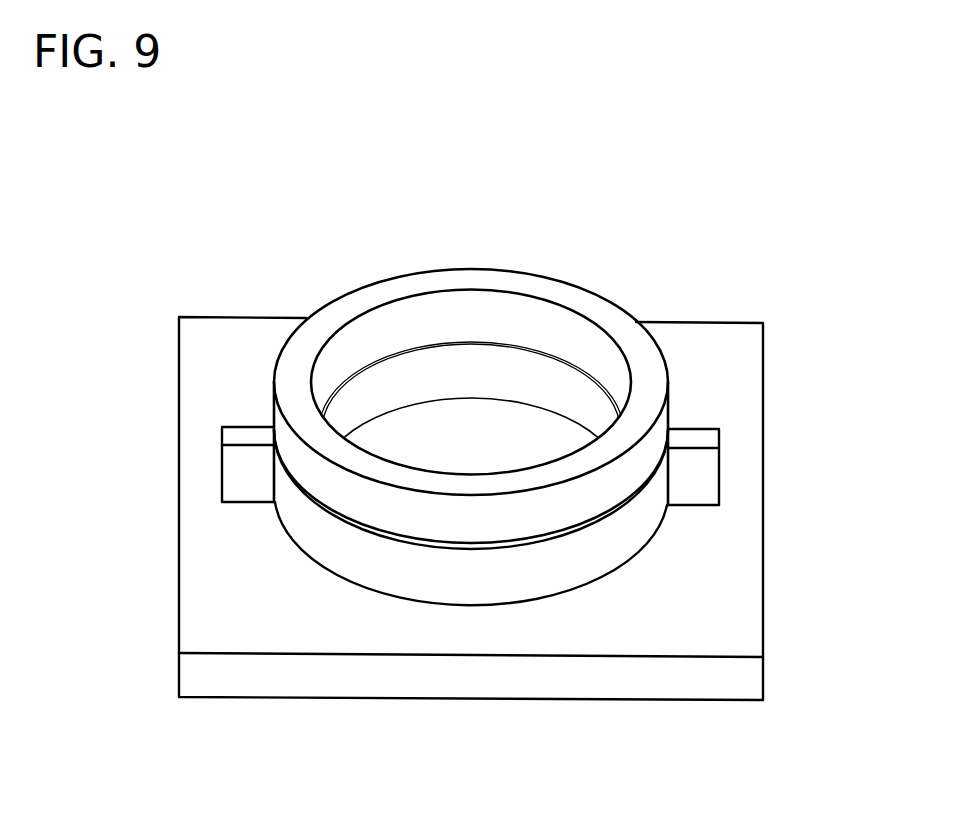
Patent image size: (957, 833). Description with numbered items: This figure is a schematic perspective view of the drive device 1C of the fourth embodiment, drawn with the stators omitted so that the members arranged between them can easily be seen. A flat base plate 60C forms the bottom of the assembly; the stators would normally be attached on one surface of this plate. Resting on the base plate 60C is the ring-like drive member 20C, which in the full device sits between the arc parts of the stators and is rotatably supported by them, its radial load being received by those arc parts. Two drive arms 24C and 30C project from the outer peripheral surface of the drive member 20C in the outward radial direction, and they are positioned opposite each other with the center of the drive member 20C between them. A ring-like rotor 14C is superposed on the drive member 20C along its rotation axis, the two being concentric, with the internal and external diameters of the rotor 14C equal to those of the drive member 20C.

The drive device 1C is at (246, 284).
The rotor 14C is at (650, 360).
The drive member 20C is at (596, 565).
The drive arm 24C is at (693, 438).
The drive arm 30C is at (254, 483).
The base plate 60C is at (388, 642).